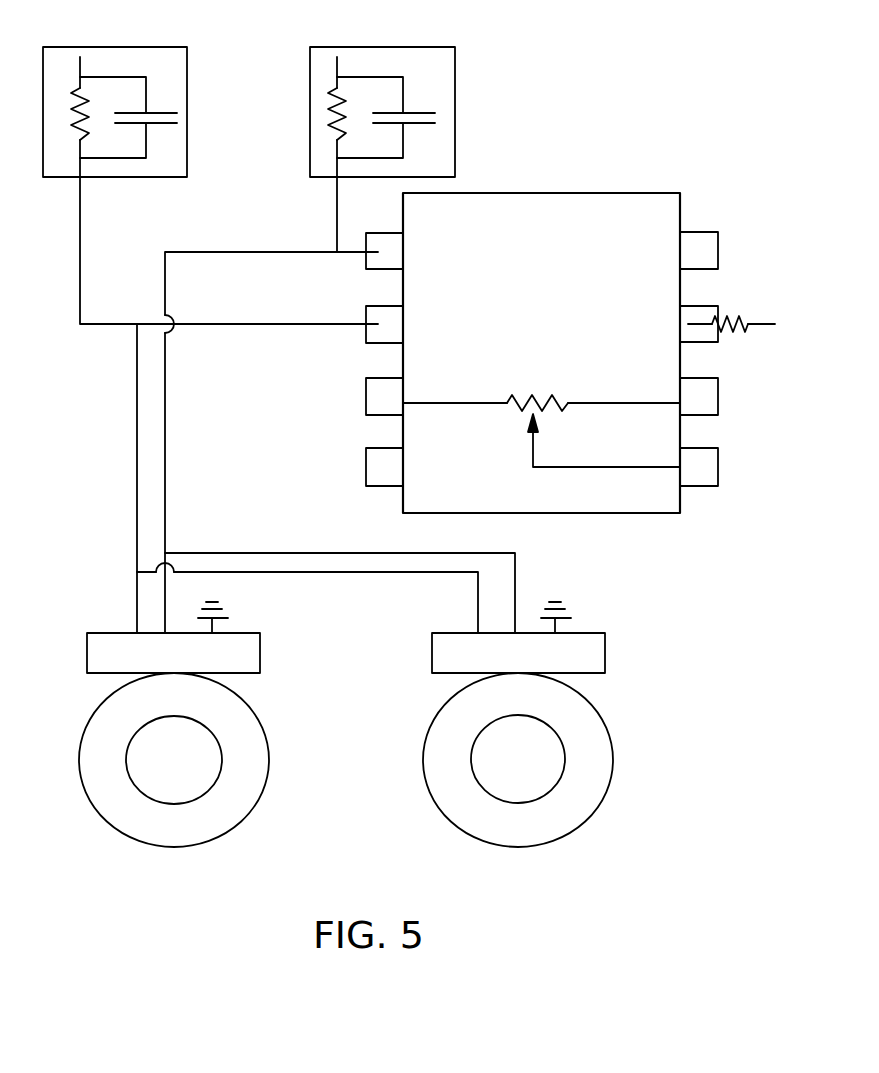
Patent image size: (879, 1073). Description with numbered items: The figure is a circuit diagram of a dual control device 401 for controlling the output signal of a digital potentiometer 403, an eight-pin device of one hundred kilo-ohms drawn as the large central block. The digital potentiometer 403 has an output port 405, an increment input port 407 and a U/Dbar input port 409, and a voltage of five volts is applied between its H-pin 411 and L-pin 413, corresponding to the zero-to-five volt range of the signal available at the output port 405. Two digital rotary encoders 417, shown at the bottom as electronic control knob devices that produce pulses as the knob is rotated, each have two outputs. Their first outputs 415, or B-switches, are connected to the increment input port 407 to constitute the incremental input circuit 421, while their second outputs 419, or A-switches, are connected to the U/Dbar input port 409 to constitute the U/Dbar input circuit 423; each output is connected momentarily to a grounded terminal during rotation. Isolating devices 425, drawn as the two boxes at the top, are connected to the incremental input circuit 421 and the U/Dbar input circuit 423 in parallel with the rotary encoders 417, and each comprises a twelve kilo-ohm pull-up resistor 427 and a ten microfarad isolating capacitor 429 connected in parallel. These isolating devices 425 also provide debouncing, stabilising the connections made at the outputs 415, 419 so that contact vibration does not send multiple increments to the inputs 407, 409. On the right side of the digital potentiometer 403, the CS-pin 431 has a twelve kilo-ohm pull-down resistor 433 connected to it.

The dual control device 401 is at (555, 30).
The digital potentiometer 403 is at (553, 222).
The output port 405 is at (700, 473).
The increment input port 407 is at (380, 243).
The U/Dbar input port 409 is at (378, 332).
The H-pin 411 is at (378, 400).
The L-pin 413 is at (702, 397).
The first outputs 415 is at (137, 600).
The digital rotary encoders 417 is at (503, 758).
The second outputs 419 is at (137, 627).
The incremental input circuit 421 is at (166, 452).
The U/Dbar input circuit 423 is at (131, 405).
The isolating devices 425 is at (278, 113).
The pull-up resistor 427 is at (86, 130).
The isolating capacitor 429 is at (310, 80).
The CS-pin 431 is at (693, 332).
The pull-down resistor 433 is at (737, 318).